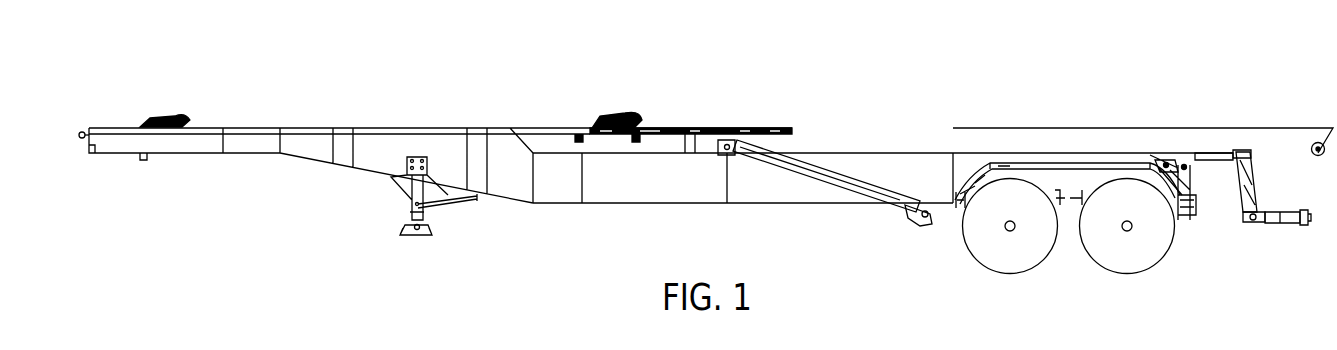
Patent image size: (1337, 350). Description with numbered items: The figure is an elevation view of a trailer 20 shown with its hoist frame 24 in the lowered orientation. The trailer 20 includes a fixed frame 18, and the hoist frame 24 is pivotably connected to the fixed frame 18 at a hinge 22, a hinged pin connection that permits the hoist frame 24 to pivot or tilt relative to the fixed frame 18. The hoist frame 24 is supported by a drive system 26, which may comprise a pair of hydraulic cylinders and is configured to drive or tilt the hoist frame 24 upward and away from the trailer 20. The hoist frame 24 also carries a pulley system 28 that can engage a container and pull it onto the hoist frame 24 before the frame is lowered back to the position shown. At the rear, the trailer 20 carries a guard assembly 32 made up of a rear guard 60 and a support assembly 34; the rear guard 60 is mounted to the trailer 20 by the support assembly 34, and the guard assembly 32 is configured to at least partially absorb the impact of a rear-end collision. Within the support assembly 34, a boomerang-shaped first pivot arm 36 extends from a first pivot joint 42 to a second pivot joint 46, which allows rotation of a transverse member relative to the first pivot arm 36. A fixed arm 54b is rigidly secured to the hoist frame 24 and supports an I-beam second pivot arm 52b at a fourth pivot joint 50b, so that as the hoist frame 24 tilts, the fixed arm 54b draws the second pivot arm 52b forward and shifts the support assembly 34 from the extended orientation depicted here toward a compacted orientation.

The fixed frame 18 is at (628, 193).
The trailer 20 is at (343, 97).
The hinge 22 is at (1164, 162).
The hoist frame 24 is at (1020, 96).
The drive system 26 is at (848, 186).
The pulley system 28 is at (617, 104).
The guard assembly 32 is at (1278, 218).
The support assembly 34 is at (1247, 230).
The first pivot arm 36 is at (1206, 162).
The first pivot joint 42 is at (1184, 164).
The second pivot joint 46 is at (1256, 210).
The fourth pivot joint 50b is at (1256, 222).
The second pivot arm 52b is at (1280, 216).
The fixed arm 54b is at (1246, 156).
The rear guard 60 is at (1306, 234).